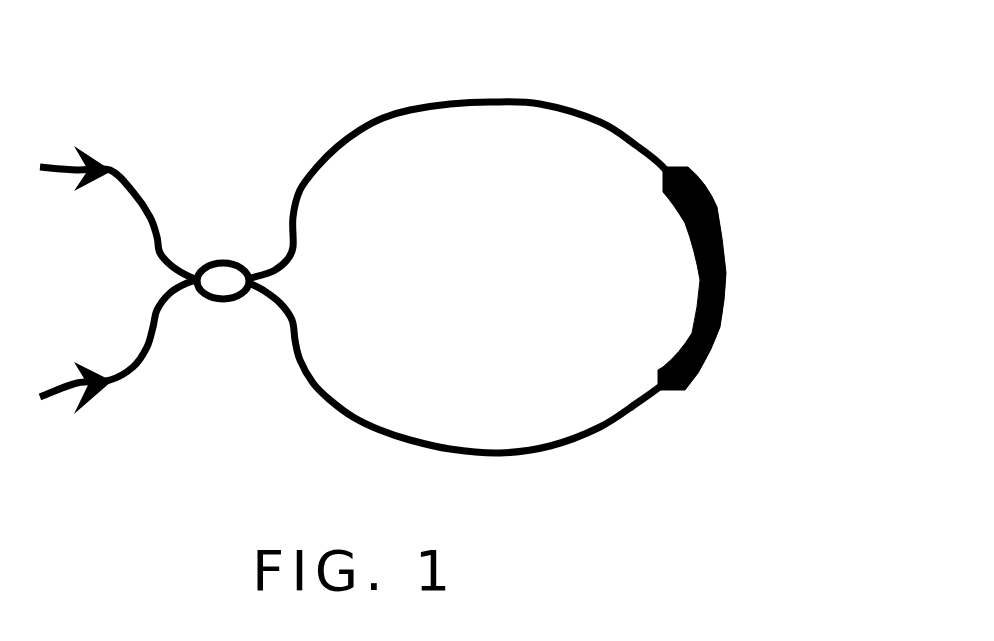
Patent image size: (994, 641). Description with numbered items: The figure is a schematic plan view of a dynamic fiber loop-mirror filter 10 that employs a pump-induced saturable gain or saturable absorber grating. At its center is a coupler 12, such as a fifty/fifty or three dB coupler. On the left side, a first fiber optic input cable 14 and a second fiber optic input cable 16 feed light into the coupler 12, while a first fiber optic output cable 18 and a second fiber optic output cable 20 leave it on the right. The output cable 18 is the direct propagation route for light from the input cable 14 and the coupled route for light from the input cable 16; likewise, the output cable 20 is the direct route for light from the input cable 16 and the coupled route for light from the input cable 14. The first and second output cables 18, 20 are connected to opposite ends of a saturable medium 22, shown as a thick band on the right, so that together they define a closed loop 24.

The fiber loop-mirror filter 10 is at (580, 66).
The coupler 12 is at (218, 258).
The first fiber optic input cable 14 is at (143, 197).
The second fiber optic input cable 16 is at (137, 368).
The first fiber optic output cable 18 is at (375, 125).
The second fiber optic output cable 20 is at (403, 447).
The saturable medium 22 is at (727, 277).
The closed loop 24 is at (572, 443).